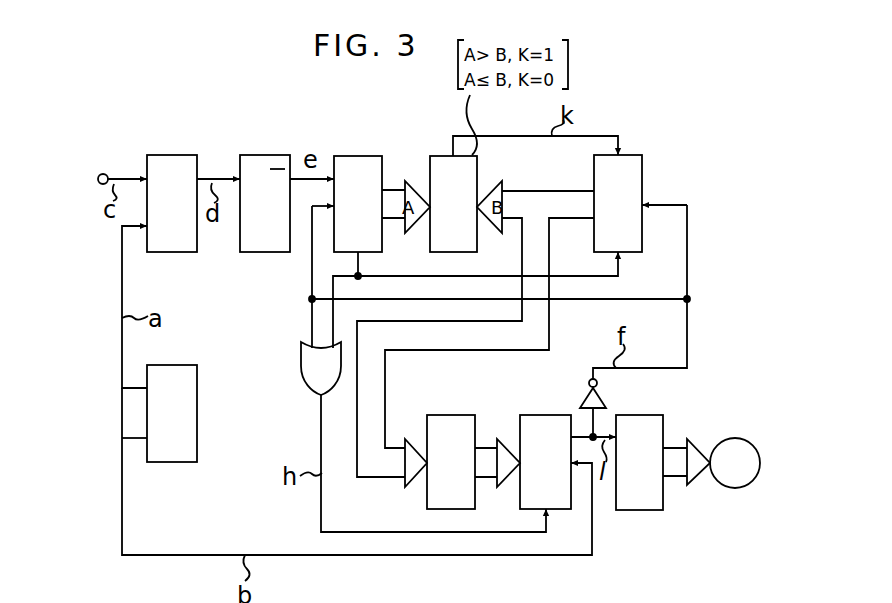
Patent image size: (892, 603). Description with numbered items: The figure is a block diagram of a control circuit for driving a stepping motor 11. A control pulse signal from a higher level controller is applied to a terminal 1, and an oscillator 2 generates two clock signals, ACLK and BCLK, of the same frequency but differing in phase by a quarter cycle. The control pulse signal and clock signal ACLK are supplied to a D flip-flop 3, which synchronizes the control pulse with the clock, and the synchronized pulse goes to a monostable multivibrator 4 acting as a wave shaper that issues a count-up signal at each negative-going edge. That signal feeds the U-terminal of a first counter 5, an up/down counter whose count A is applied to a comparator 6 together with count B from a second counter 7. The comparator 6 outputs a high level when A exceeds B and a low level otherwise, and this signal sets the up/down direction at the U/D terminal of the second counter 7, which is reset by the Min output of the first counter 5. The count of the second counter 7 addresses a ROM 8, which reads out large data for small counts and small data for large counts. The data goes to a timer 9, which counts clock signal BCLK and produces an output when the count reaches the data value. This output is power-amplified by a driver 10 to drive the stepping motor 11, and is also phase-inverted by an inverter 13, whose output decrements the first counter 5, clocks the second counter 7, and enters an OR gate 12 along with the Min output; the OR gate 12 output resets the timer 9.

The terminal 1 is at (99, 175).
The oscillator 2 is at (172, 462).
The D flip-flop 3 is at (175, 155).
The monostable multivibrator 4 is at (267, 155).
The first counter 5 is at (358, 156).
The comparator 6 is at (437, 156).
The second counter 7 is at (637, 155).
The ROM 8 is at (451, 415).
The timer 9 is at (554, 509).
The driver 10 is at (640, 510).
The stepping motor 11 is at (738, 488).
The OR gate 12 is at (314, 388).
The inverter 13 is at (601, 398).